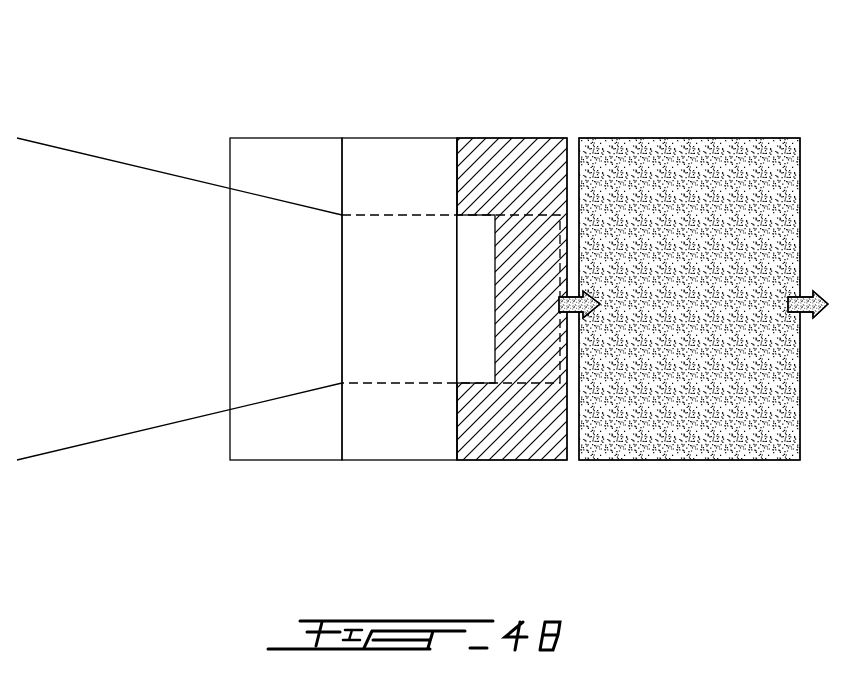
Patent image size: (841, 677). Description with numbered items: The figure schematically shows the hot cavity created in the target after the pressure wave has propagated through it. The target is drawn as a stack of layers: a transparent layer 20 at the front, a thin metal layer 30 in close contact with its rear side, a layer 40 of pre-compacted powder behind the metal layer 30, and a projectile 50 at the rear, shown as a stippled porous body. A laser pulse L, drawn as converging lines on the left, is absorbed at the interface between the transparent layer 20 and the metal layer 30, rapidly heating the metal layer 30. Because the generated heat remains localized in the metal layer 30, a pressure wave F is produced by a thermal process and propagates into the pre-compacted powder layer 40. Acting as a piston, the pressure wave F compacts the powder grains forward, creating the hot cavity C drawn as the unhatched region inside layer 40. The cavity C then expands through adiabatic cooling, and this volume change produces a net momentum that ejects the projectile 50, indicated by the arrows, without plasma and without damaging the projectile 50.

The transparent layer 20 is at (284, 138).
The metal layer 30 is at (397, 138).
The layer of pre-compacted powder 40 is at (514, 460).
The projectile 50 is at (682, 460).
The hot cavity C is at (478, 256).
The pressure wave F is at (567, 256).
The laser pulse L is at (179, 299).